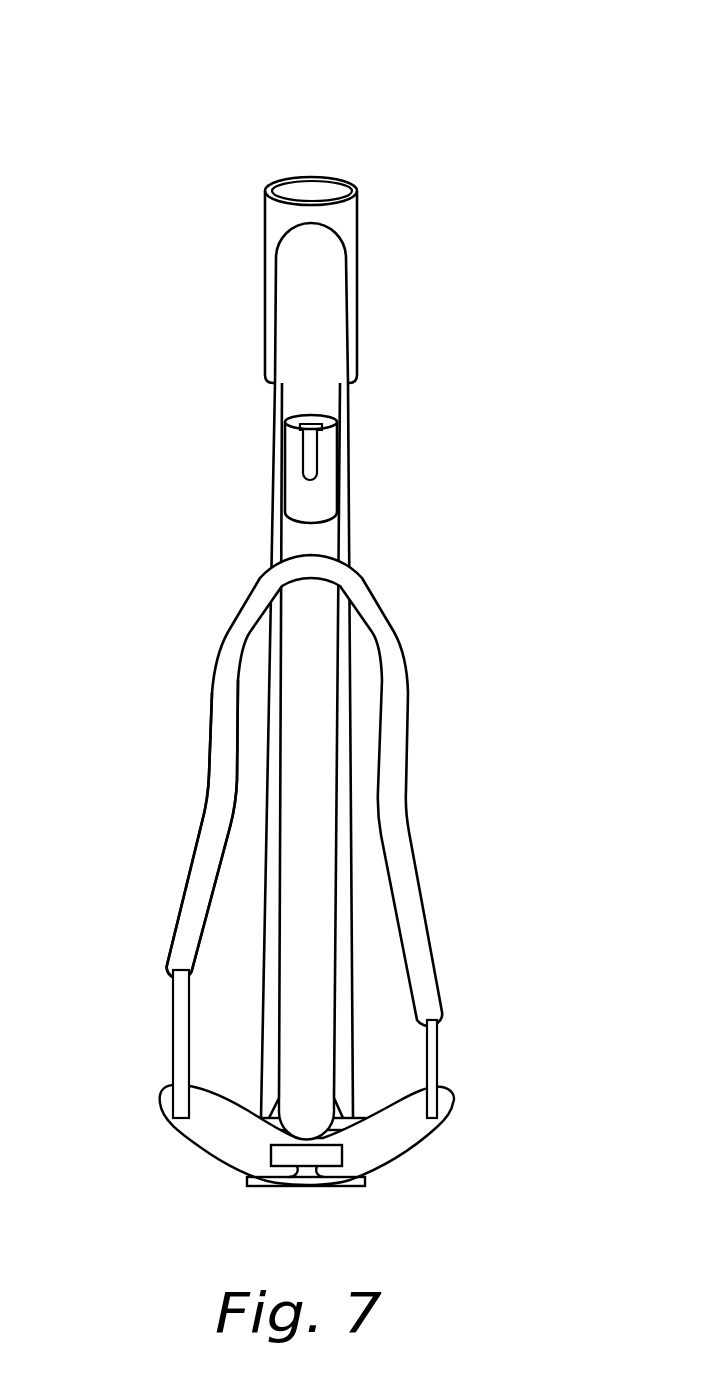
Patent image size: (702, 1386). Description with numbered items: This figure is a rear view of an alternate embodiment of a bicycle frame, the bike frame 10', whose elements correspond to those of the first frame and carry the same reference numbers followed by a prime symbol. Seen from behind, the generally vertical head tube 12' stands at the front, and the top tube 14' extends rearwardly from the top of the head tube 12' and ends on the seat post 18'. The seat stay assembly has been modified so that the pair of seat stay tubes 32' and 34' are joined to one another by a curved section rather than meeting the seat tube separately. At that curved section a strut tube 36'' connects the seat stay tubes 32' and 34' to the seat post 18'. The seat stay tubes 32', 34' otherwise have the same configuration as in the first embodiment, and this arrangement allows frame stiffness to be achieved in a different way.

The bike frame 10' is at (330, 597).
The head tube 12' is at (355, 280).
The top tube 14' is at (365, 670).
The seat post 18' is at (371, 469).
The strut tube 36'' is at (358, 750).
The seat stay tube 32' is at (342, 836).
The seat stay tube 34' is at (173, 899).